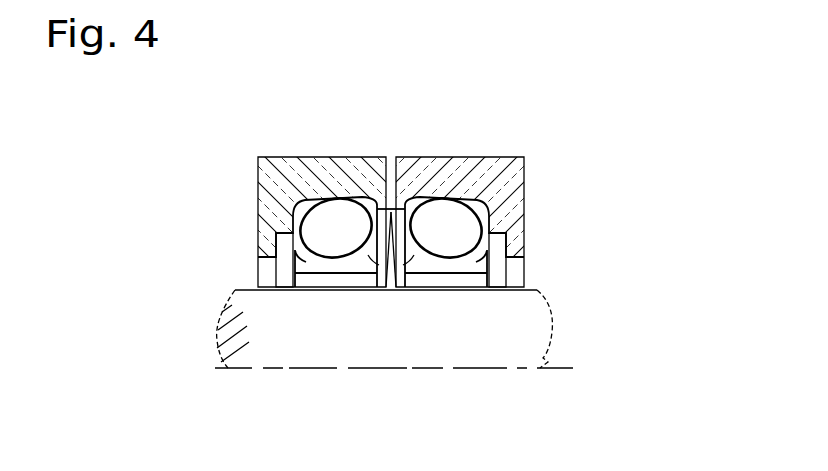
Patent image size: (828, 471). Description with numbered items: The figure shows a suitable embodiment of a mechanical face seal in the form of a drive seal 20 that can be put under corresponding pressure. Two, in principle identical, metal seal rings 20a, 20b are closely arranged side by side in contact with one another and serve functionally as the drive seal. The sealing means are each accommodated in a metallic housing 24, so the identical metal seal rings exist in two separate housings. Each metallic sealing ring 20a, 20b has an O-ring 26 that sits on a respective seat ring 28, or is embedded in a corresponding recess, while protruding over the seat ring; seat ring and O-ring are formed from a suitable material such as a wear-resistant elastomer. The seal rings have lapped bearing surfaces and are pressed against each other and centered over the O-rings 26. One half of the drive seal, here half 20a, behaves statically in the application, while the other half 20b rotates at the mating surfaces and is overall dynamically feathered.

The drive seal 20 is at (548, 182).
The metal seal ring 20a is at (250, 213).
The metal seal ring 20b is at (428, 148).
The metallic housing 24 is at (301, 166).
The O-ring 26 is at (318, 232).
The seat ring 28 is at (368, 253).